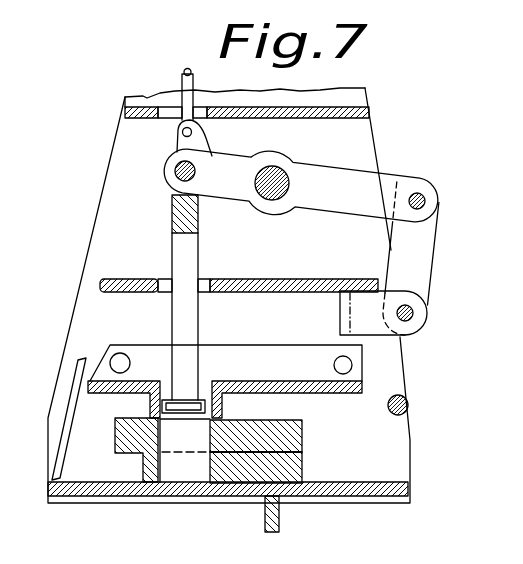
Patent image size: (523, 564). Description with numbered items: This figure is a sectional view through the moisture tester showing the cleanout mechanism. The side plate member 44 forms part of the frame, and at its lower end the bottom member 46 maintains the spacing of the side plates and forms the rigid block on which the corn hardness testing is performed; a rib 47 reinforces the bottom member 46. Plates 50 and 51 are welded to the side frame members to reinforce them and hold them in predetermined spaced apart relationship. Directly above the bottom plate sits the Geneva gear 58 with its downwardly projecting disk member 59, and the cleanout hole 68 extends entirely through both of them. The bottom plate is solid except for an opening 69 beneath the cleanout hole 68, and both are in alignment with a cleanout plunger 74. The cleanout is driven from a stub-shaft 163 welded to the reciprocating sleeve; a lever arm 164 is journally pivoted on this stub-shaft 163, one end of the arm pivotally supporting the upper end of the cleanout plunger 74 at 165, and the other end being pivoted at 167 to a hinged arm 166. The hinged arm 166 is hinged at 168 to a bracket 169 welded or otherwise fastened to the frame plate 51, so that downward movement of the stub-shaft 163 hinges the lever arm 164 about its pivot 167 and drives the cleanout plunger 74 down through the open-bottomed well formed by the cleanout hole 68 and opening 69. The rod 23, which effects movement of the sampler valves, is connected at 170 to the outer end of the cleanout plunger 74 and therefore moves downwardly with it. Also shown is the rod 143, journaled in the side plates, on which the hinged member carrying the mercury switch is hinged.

The rod 23 is at (183, 76).
The plate 50 is at (135, 100).
The connection 170 is at (181, 134).
The pivot 165 is at (174, 172).
The stub-shaft 163 is at (284, 170).
The lever arm 164 is at (355, 169).
The pivot 167 is at (426, 202).
The hinged arm 166 is at (432, 245).
The hinge 168 is at (414, 313).
The bracket 169 is at (383, 337).
The rod 143 is at (409, 406).
The side plate member 44 is at (108, 223).
The plate 51 is at (110, 278).
The cleanout plunger 74 is at (186, 404).
The Geneva gear 58 is at (302, 435).
The disk member 59 is at (302, 465).
The cleanout hole 68 is at (172, 476).
The opening 69 is at (190, 495).
The bottom member 46 is at (336, 496).
The rib 47 is at (272, 533).